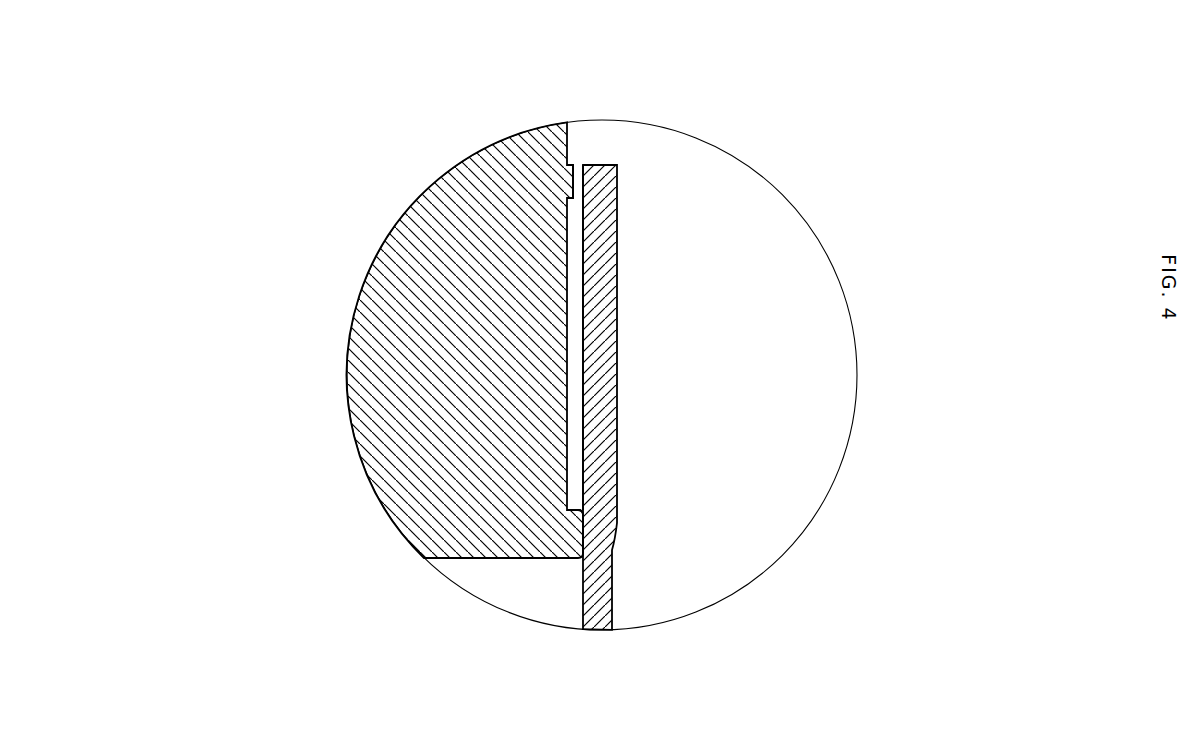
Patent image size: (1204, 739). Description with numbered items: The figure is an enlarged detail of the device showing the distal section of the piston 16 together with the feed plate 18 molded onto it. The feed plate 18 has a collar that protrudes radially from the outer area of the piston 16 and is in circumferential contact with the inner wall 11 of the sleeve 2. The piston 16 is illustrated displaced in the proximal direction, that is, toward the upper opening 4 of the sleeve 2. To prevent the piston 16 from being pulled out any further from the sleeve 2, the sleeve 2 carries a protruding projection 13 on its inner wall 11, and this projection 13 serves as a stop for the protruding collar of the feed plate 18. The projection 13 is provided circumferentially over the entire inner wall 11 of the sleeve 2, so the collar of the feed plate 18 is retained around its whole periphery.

The sleeve 2 is at (598, 256).
The upper opening 4 is at (572, 162).
The inner wall 11 is at (578, 362).
The projection 13 is at (577, 485).
The piston 16 is at (437, 257).
The feed plate 18 is at (453, 539).